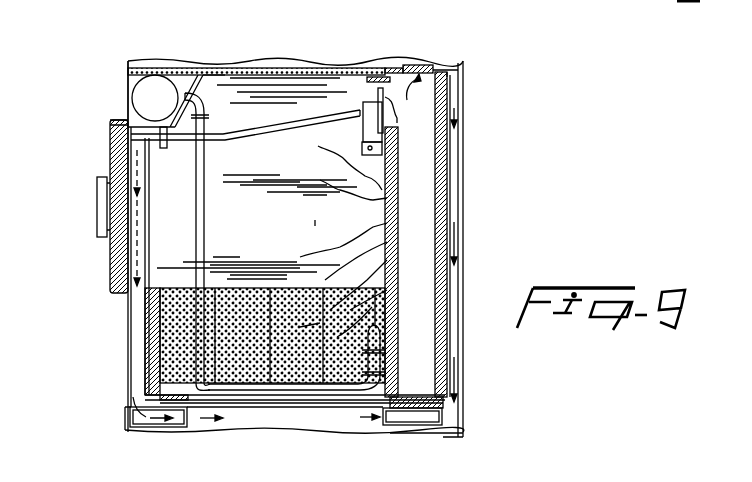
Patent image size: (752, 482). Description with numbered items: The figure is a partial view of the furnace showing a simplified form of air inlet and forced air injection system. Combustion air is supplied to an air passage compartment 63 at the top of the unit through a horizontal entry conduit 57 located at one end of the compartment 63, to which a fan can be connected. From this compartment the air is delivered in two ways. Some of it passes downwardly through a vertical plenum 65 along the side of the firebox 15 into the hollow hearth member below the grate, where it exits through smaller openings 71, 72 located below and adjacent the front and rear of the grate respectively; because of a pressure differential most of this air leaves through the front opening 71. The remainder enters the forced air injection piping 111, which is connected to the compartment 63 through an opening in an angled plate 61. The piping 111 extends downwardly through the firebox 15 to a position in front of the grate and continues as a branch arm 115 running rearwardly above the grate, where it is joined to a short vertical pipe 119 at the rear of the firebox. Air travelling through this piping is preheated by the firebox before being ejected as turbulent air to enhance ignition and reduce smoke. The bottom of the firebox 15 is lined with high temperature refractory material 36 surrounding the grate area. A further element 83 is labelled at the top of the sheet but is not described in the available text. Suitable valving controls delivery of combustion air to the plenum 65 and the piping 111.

The air passage compartment 63 is at (129, 61).
The conduit 57 is at (173, 90).
The angled plate 61 is at (208, 80).
The conduit 83 is at (610, 2).
The firebox 15 is at (315, 223).
The forced air injection piping 111 is at (197, 183).
The vertical plenum 65 is at (113, 253).
The high temperature refractory material 36 is at (147, 343).
The opening 71 is at (192, 418).
The branch arm 115 is at (259, 388).
The opening 72 is at (380, 420).
The vertical pipe 119 is at (397, 338).